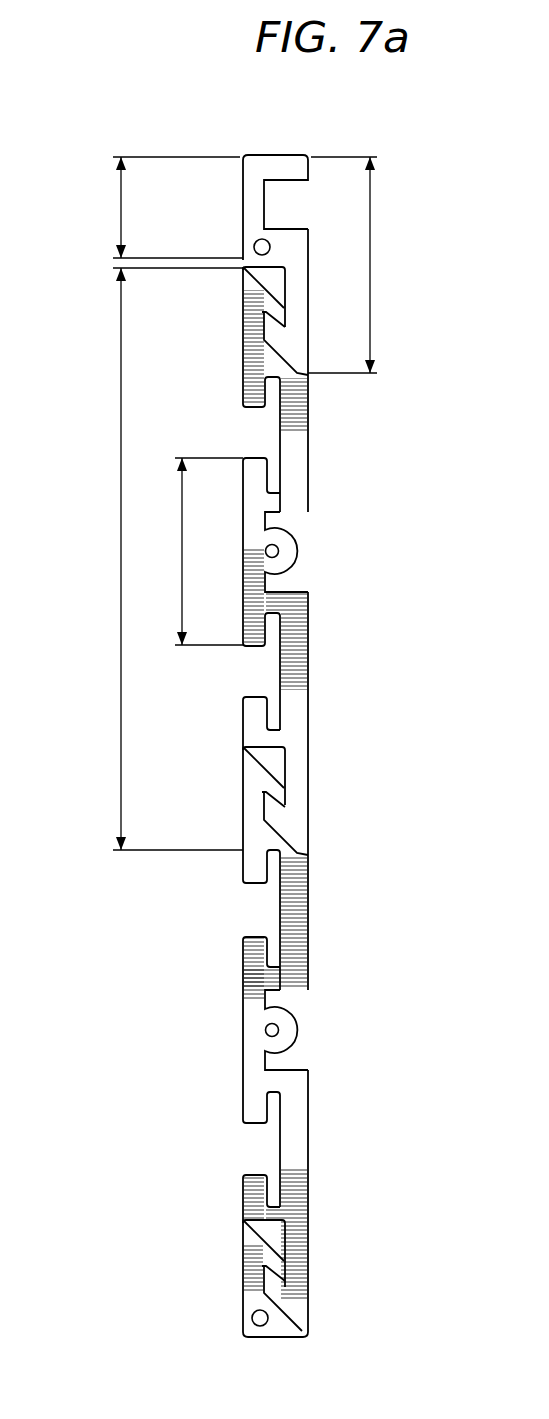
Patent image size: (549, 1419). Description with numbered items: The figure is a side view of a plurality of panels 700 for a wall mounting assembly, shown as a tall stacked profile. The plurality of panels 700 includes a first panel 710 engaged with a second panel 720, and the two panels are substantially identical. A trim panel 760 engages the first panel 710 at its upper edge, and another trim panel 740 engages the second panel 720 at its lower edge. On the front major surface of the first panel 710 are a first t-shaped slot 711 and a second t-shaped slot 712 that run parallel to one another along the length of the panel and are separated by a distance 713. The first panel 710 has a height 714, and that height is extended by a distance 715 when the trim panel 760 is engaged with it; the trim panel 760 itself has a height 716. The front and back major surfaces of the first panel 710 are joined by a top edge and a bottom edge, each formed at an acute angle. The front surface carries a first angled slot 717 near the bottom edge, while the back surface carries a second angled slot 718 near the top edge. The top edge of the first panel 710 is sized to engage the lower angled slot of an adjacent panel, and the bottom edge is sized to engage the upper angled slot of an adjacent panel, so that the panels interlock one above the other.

The plurality of panels 700 is at (168, 100).
The trim panel 760 is at (290, 144).
The first t-shaped slot 711 is at (260, 433).
The second t-shaped slot 712 is at (262, 670).
The first panel 710 is at (332, 626).
The second panel 720 is at (332, 916).
The trim panel 740 is at (294, 1349).
The first angled slot 717 is at (281, 790).
The second angled slot 718 is at (270, 339).
The distance 713 is at (182, 555).
The height 714 is at (121, 465).
The distance 715 is at (121, 208).
The height 716 is at (370, 263).